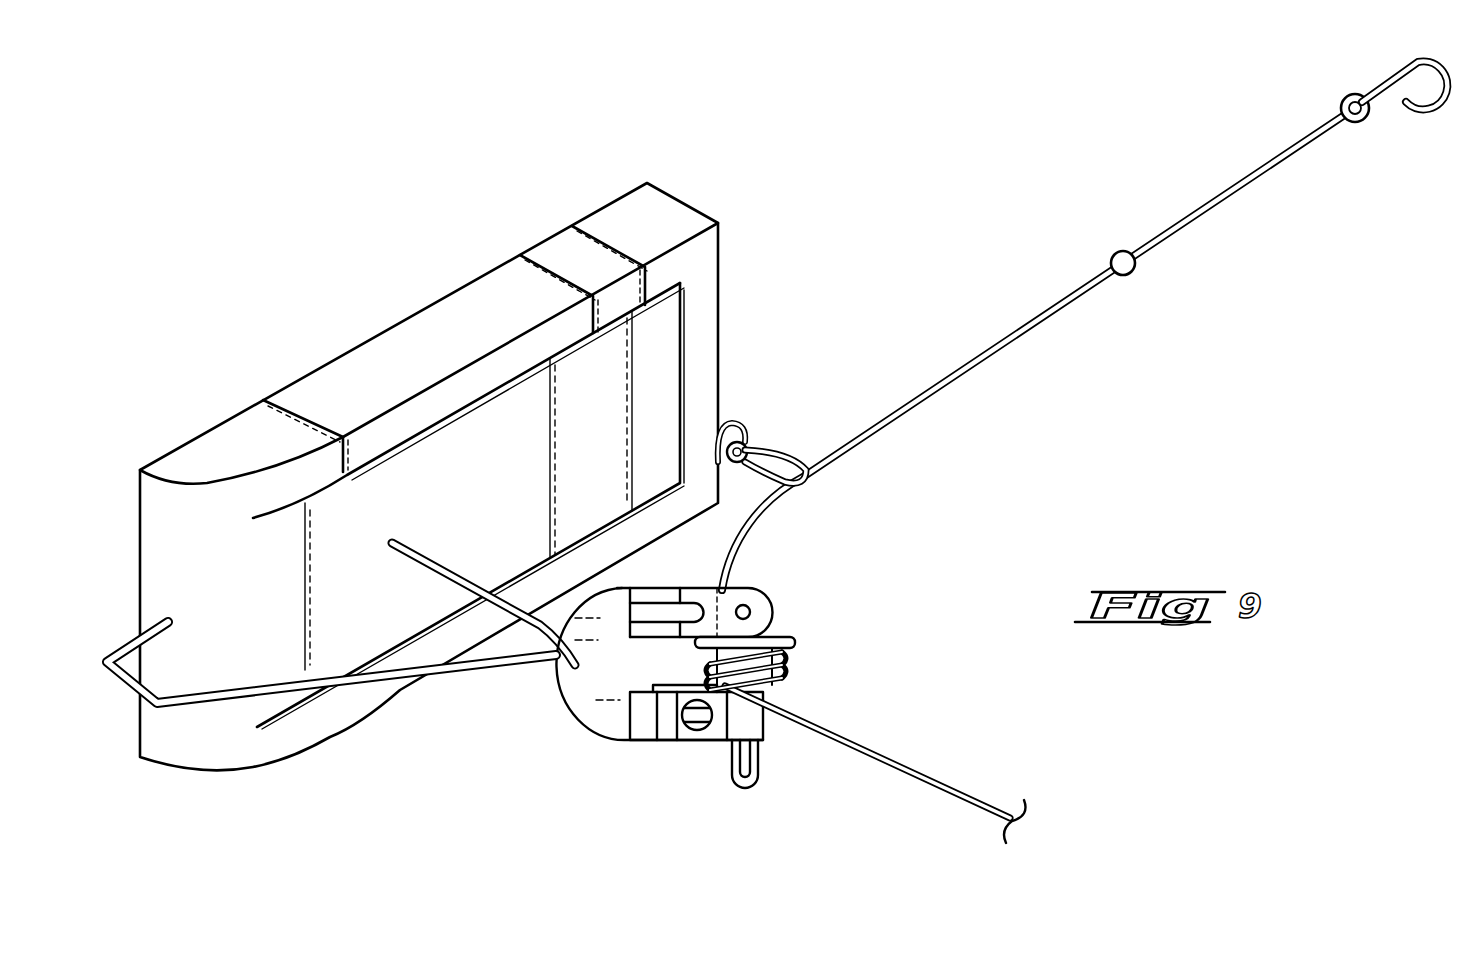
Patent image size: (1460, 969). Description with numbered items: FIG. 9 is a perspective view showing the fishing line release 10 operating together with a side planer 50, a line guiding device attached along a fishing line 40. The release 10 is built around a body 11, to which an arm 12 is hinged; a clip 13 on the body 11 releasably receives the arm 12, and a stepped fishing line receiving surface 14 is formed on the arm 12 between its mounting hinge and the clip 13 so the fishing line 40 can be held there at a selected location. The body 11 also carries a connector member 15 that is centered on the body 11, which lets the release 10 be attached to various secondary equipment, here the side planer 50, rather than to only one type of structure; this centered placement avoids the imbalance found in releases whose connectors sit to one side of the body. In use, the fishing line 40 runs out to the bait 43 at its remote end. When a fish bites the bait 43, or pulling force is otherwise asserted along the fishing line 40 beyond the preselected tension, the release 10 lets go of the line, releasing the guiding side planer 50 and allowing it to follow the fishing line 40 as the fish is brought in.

The fishing line release 10 is at (773, 585).
The body 11 is at (622, 720).
The arm 12 is at (764, 757).
The clip 13 is at (772, 727).
The stepped fishing line receiving surface 14 is at (788, 656).
The connector member 15 is at (558, 675).
The fishing line 40 is at (1062, 302).
The bait 43 is at (1405, 72).
The side planer 50 is at (722, 262).